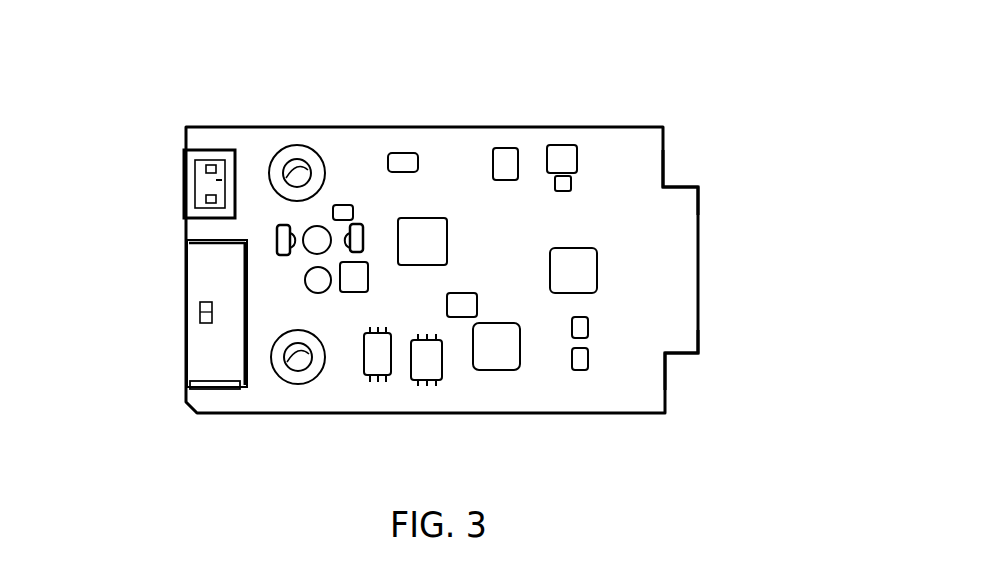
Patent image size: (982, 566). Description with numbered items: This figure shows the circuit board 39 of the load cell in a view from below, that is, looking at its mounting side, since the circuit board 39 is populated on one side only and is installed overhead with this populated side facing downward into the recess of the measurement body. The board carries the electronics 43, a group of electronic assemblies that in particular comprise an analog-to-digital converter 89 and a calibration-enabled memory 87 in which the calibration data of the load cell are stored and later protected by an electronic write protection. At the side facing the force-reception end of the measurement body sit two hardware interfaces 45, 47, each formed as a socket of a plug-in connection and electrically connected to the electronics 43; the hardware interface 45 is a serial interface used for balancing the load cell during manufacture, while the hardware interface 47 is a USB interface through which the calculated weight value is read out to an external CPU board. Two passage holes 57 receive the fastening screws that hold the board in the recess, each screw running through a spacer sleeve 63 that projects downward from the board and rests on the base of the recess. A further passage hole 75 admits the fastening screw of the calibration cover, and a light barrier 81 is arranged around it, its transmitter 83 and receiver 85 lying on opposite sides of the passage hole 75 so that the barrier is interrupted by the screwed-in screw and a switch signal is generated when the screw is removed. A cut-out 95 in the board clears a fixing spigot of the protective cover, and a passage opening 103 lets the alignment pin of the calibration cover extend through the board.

The circuit board 39 is at (630, 145).
The electronics 43 is at (622, 268).
The hardware interface 45 is at (193, 343).
The hardware interface 47 is at (184, 182).
The passage hole 57 is at (295, 180).
The spacer sleeve 63 is at (297, 152).
The passage hole 75 is at (320, 232).
The light barrier 81 is at (258, 233).
The transmitter 83 is at (363, 233).
The receiver 85 is at (278, 227).
The calibration-enabled memory 87 is at (412, 152).
The analog-to-digital converter 89 is at (510, 350).
The cut-out 95 is at (684, 157).
The passage opening 103 is at (321, 290).